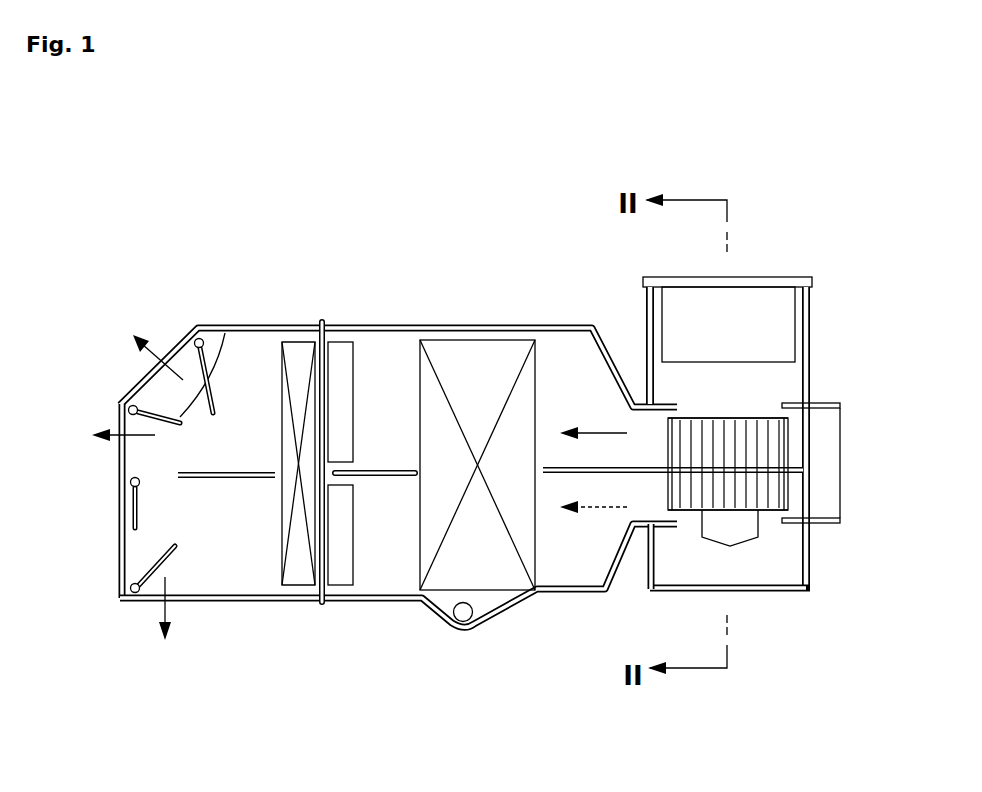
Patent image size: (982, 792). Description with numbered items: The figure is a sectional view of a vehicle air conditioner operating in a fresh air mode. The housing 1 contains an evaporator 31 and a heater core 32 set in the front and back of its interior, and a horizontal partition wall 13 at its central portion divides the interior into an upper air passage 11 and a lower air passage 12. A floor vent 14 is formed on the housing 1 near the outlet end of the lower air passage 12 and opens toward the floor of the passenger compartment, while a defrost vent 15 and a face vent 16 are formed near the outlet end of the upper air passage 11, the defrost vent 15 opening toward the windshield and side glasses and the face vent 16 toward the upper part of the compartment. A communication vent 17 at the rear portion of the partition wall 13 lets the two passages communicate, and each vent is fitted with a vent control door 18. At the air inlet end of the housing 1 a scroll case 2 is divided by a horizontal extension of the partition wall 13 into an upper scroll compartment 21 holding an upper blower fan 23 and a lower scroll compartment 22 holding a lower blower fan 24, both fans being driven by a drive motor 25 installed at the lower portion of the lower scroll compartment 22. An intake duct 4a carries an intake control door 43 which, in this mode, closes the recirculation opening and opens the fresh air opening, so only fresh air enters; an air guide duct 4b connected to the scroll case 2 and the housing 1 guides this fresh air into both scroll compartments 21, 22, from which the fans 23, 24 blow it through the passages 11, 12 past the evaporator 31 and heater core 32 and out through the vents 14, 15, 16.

The housing 1 is at (398, 466).
The scroll case 2 is at (784, 535).
The intake duct 4a is at (820, 337).
The air guide duct 4b is at (820, 554).
The upper air passage 11 is at (563, 355).
The lower air passage 12 is at (383, 568).
The partition wall 13 is at (232, 480).
The floor vent 14 is at (177, 600).
The defrost vent 15 is at (175, 348).
The face vent 16 is at (120, 422).
The communication vent 17 is at (158, 472).
The vent control door 18 is at (204, 370).
The upper scroll compartment 21 is at (800, 393).
The lower scroll compartment 22 is at (672, 527).
The upper blower fan 23 is at (784, 442).
The lower blower fan 24 is at (784, 490).
The drive motor 25 is at (740, 534).
The evaporator 31 is at (490, 568).
The heater core 32 is at (297, 582).
The intake control door 43 is at (764, 290).